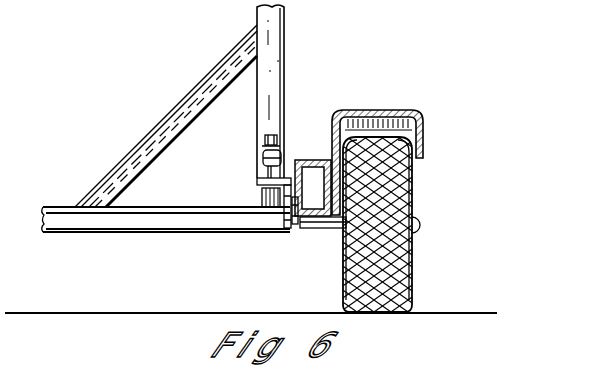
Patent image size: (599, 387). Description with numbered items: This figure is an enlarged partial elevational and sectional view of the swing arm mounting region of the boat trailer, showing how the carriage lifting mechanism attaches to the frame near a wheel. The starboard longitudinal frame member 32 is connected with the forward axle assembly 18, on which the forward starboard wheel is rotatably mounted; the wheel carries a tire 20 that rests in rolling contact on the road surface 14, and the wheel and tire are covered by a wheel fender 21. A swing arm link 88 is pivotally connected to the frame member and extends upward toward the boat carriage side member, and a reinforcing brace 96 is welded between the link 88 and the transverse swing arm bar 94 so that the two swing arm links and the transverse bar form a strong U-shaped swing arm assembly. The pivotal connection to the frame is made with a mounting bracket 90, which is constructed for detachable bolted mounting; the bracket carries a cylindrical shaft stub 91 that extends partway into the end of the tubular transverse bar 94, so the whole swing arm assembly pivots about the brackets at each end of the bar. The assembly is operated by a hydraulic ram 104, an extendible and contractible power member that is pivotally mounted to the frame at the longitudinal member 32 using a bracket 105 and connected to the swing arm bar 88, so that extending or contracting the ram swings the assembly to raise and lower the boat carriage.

The road surface 14 is at (55, 313).
The axle assembly 18 is at (318, 233).
The tire 20 is at (404, 193).
The wheel fender 21 is at (405, 115).
The starboard longitudinal frame member 32 is at (310, 160).
The swing arm link 88 is at (276, 64).
The mounting bracket 90 is at (294, 232).
The cylindrical shaft stub 91 is at (281, 232).
The transverse swing arm bar 94 is at (163, 222).
The reinforcing brace 96 is at (164, 127).
The hydraulic ram 104 is at (264, 152).
The bracket 105 is at (259, 190).